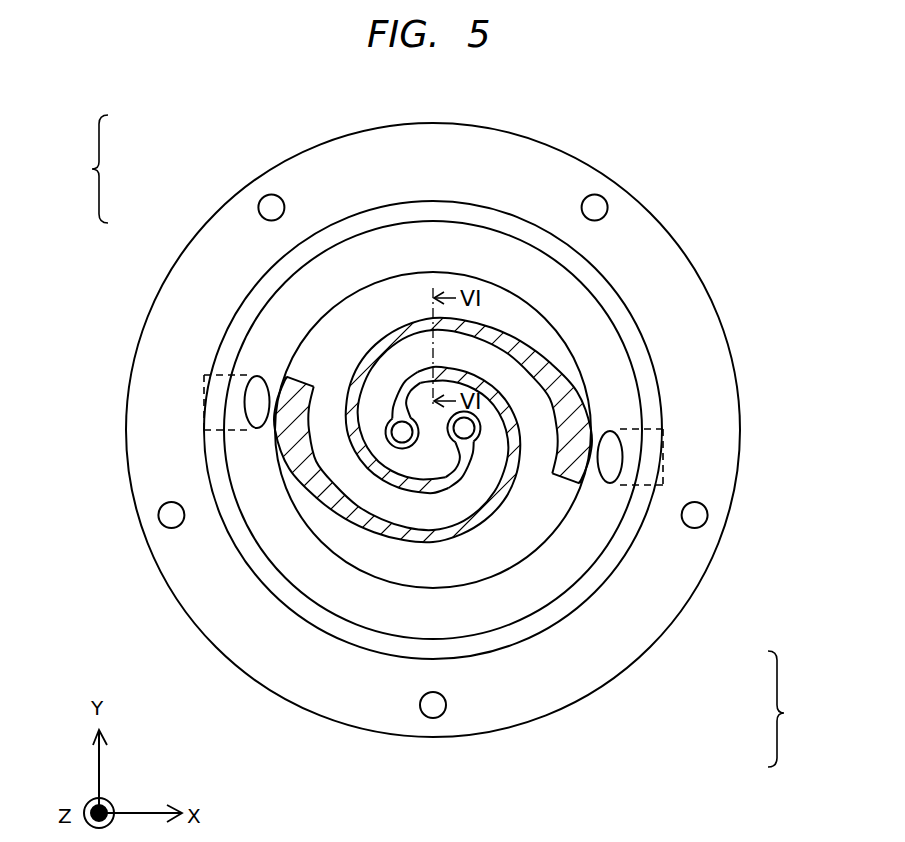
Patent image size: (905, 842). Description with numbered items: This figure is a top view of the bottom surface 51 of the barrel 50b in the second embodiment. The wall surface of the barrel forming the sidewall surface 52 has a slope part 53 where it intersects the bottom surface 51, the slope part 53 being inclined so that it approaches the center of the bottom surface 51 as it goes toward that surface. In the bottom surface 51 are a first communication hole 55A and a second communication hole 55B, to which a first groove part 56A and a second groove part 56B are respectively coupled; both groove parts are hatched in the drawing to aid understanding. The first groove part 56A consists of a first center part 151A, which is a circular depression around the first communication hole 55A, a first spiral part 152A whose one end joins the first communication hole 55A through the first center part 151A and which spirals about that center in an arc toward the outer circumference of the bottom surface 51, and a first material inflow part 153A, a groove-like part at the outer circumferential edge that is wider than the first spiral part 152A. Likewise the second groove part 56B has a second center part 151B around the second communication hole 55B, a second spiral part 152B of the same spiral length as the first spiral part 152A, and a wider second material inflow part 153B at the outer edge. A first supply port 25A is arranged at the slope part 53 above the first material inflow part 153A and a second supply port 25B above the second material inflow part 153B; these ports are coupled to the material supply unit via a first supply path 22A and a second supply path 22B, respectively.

The barrel 50b is at (721, 153).
The bottom surface 51 is at (388, 302).
The sidewall surface 52 is at (235, 500).
The slope part 53 is at (260, 364).
The first supply path 22A is at (207, 375).
The second supply path 22B is at (662, 428).
The first supply port 25A is at (250, 378).
The second supply port 25B is at (608, 430).
The first communication hole 55A is at (405, 452).
The second communication hole 55B is at (472, 428).
The first groove part 56A is at (75, 169).
The second groove part 56B is at (800, 709).
The first center part 151A is at (389, 421).
The second center part 151B is at (477, 440).
The first spiral part 152A is at (355, 402).
The second spiral part 152B is at (517, 443).
The first material inflow part 153A is at (318, 373).
The second material inflow part 153B is at (575, 462).